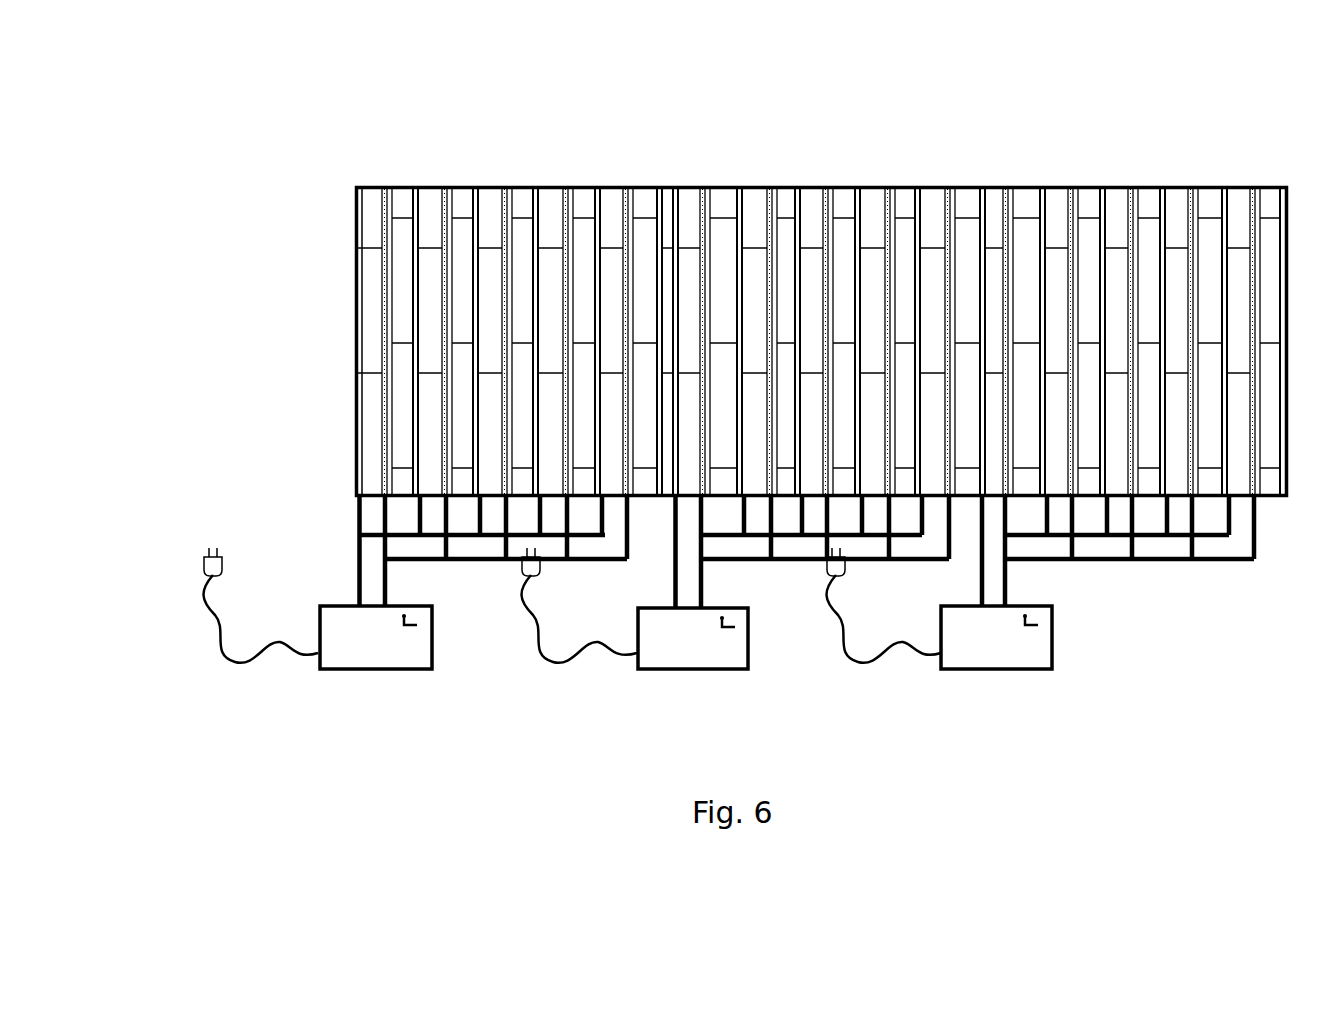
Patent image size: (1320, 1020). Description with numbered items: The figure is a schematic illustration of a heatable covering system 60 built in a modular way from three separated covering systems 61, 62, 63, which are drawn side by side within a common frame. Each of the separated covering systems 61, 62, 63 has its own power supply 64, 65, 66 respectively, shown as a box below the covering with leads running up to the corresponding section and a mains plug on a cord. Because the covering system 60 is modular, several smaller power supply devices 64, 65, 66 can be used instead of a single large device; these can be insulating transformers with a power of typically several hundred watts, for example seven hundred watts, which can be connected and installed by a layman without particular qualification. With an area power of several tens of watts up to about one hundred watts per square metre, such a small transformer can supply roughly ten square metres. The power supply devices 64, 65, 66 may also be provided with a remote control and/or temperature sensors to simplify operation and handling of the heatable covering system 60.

The covering system 60 is at (166, 145).
The separated covering system 61 is at (1137, 161).
The separated covering system 62 is at (865, 168).
The separated covering system 63 is at (534, 168).
The power supply 64 is at (370, 655).
The power supply 65 is at (668, 655).
The power supply 66 is at (1008, 655).